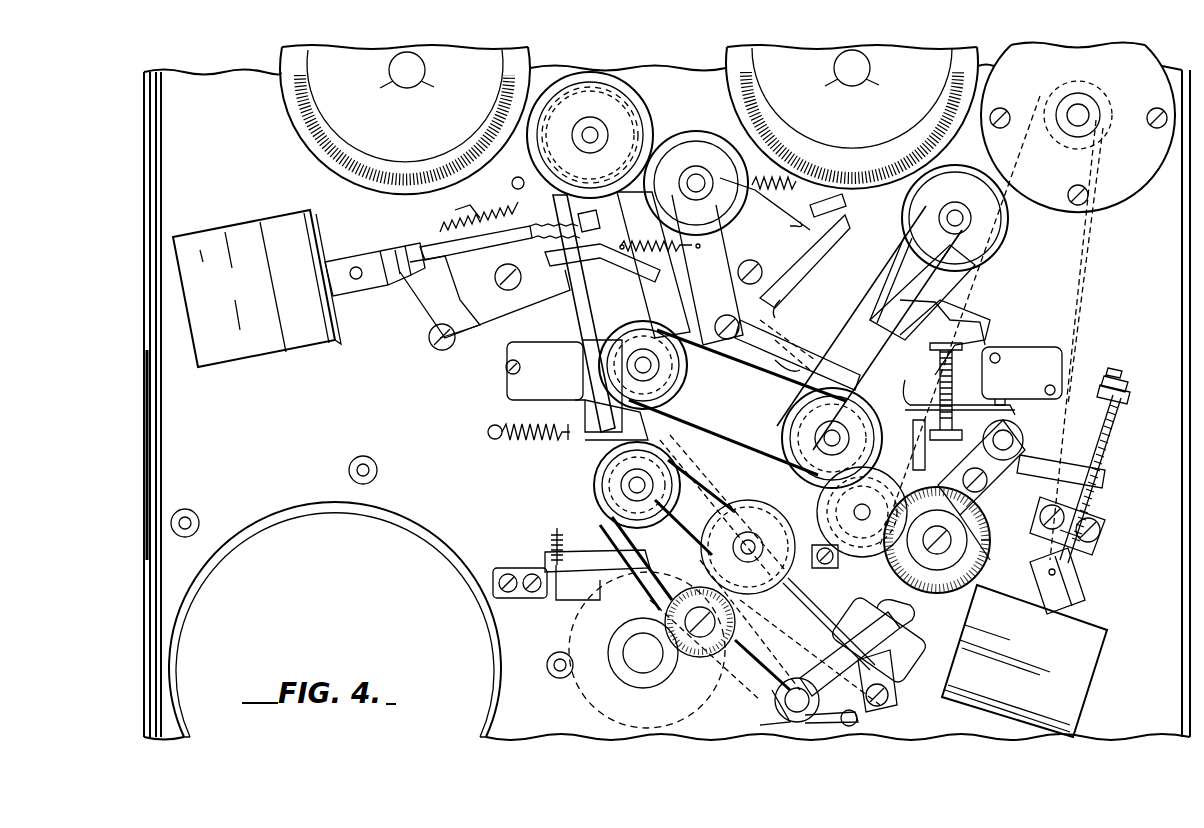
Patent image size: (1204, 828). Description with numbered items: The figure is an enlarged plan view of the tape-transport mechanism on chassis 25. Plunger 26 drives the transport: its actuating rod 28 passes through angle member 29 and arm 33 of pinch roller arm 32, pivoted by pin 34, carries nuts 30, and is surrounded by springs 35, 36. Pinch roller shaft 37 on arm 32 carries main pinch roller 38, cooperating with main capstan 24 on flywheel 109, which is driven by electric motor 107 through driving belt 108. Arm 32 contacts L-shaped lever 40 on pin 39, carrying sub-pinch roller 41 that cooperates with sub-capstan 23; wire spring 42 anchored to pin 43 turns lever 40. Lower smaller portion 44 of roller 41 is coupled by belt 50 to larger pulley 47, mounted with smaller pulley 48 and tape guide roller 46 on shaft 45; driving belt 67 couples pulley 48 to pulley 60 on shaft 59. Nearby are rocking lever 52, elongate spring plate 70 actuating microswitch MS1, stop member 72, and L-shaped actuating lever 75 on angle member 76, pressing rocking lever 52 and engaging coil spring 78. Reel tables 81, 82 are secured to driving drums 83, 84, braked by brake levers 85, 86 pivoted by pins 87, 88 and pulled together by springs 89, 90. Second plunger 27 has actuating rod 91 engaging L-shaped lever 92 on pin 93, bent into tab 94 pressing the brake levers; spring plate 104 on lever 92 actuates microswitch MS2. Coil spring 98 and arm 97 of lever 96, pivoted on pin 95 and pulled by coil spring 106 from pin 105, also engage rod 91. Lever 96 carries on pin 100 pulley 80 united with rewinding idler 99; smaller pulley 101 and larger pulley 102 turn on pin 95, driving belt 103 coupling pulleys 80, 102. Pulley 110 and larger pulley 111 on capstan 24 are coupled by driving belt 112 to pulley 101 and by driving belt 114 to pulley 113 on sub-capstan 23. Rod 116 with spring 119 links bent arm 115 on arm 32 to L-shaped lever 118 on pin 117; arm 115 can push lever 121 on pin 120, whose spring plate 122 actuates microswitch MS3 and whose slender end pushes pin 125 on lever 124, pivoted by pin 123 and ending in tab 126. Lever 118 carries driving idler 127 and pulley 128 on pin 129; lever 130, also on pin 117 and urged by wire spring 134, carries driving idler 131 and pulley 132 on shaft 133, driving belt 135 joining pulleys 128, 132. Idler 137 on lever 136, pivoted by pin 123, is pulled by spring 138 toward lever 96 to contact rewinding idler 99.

The sub-capstan 23 is at (628, 648).
The main capstan 24 is at (858, 560).
The chassis 25 is at (155, 432).
The plunger 26 is at (1085, 668).
The plunger 27 is at (215, 245).
The actuating rod 28 is at (1072, 560).
The angle member 29 is at (1098, 536).
The nuts 30 is at (1120, 398).
The pinch roller arm 32 is at (1020, 470).
The arm 33 is at (1108, 474).
The pin 34 is at (1025, 435).
The spring 35 is at (1095, 500).
The spring 36 is at (1110, 436).
The pinch roller shaft 37 is at (985, 570).
The main pinch roller 38 is at (990, 545).
The pin 39 is at (775, 718).
The L-shaped lever 40 is at (785, 680).
The sub-pinch roller 41 is at (697, 655).
The wire spring 42 is at (828, 720).
The pin 43 is at (858, 720).
The lower smaller portion 44 is at (732, 628).
The shaft 45 is at (615, 480).
The tape guide roller 46 is at (598, 463).
The pulley 47 is at (600, 500).
The pulley 48 is at (603, 518).
The belt 50 is at (650, 595).
The rocking lever 52 is at (605, 565).
The shaft 59 is at (750, 520).
The pulley 60 is at (755, 600).
The driving belt 67 is at (720, 494).
The elongate spring plate 70 is at (830, 625).
The stop member 72 is at (822, 568).
The L-shaped actuating lever 75 is at (566, 600).
The angle member 76 is at (512, 565).
The coil spring 78 is at (550, 535).
The pulley 80 is at (645, 108).
The reel table 81 is at (318, 102).
The reel table 82 is at (748, 78).
The driving drum 83 is at (300, 91).
The driving drum 84 is at (752, 100).
The brake lever 85 is at (410, 240).
The brake lever 86 is at (800, 248).
The pin 87 is at (497, 285).
The pin 88 is at (760, 283).
The spring 89 is at (486, 207).
The spring 90 is at (772, 198).
The actuating rod 91 is at (458, 262).
The L-shaped lever 92 is at (420, 318).
The pin 93 is at (430, 345).
The tab 94 is at (660, 300).
The pin 95 is at (590, 420).
The lever 96 is at (620, 418).
The arm 97 is at (530, 222).
The coil spring 98 is at (570, 215).
The rewinding idler 99 is at (625, 95).
The pin 100 is at (595, 120).
The pulley 101 is at (688, 380).
The pulley 102 is at (676, 402).
The driving belt 103 is at (575, 268).
The spring plate 104 is at (508, 355).
The pin 105 is at (488, 433).
The coil spring 106 is at (540, 445).
The electric motor 107 is at (1120, 195).
The driving belt 108 is at (1075, 263).
The flywheel 109 is at (965, 627).
The pulley 110 is at (905, 600).
The pulley 111 is at (913, 452).
The driving belt 112 is at (708, 452).
The pulley 113 is at (582, 700).
The driving belt 114 is at (715, 696).
The bent arm 115 is at (988, 500).
The rod 116 is at (958, 338).
The pin 117 is at (860, 305).
The L-shaped lever 118 is at (950, 318).
The spring 119 is at (965, 370).
The pin 120 is at (860, 312).
The lever 121 is at (820, 330).
The spring plate 122 is at (1025, 412).
The pin 123 is at (738, 340).
The lever 124 is at (774, 307).
The pin 125 is at (778, 365).
The tab 126 is at (656, 304).
The driving idler 127 is at (768, 386).
The pulley 128 is at (795, 455).
The pin 129 is at (812, 437).
The lever 130 is at (895, 272).
The driving idler 131 is at (1006, 220).
The pulley 132 is at (985, 225).
The shaft 133 is at (960, 220).
The wire spring 134 is at (975, 286).
The driving belt 135 is at (900, 238).
The lever 136 is at (715, 240).
The idler 137 is at (692, 140).
The spring 138 is at (706, 196).
The microswitch MS1 is at (905, 660).
The microswitch MS2 is at (508, 386).
The microswitch MS3 is at (1063, 365).